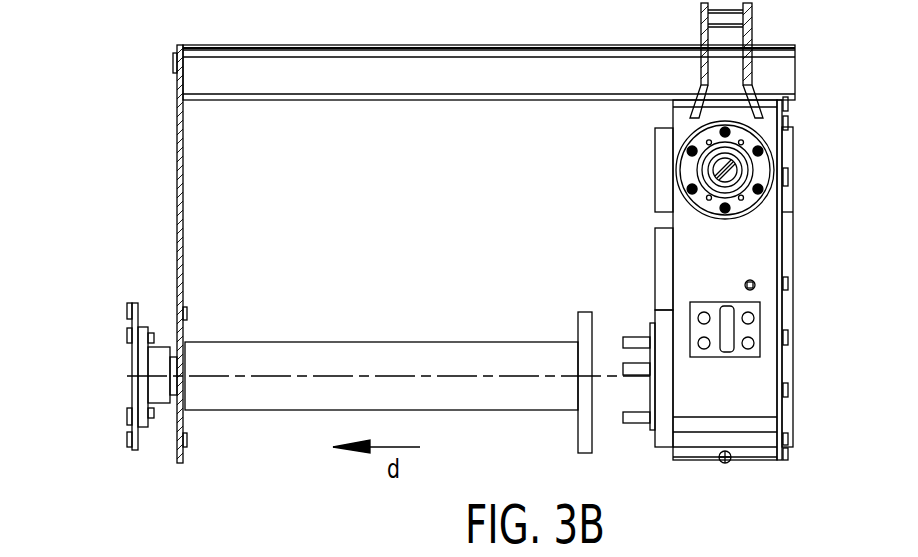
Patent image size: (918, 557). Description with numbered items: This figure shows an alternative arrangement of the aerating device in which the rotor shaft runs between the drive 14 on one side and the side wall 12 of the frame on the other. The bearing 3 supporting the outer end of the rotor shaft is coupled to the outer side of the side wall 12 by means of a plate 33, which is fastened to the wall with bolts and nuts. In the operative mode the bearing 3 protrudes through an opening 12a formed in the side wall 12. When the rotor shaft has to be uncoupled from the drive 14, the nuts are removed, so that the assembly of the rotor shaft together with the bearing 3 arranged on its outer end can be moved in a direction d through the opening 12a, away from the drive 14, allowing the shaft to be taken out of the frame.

The side wall 12 is at (177, 207).
The opening 12a is at (183, 330).
The bearing 3 is at (142, 360).
The plate 33 is at (142, 358).
The drive 14 is at (752, 230).